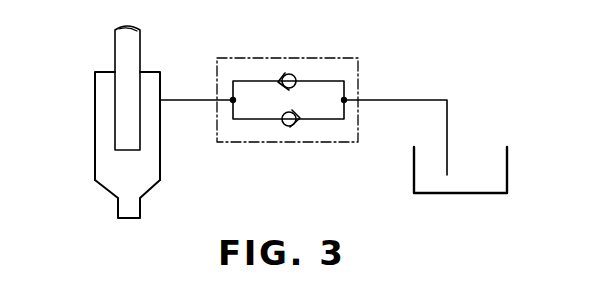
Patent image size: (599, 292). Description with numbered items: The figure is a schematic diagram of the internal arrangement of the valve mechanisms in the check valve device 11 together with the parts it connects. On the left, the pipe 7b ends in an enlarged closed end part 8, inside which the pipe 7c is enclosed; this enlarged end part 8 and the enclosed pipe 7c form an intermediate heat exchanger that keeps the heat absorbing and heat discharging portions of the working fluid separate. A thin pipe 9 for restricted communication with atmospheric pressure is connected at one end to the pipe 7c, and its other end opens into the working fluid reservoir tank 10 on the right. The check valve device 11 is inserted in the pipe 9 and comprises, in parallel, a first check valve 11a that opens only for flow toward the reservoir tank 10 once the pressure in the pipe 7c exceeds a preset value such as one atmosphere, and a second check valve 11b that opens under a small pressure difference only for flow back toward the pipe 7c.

The pipe 7b is at (115, 42).
The enlarged closed end part 8 is at (115, 125).
The pipe 7c is at (160, 158).
The check valve device 11 is at (345, 57).
The first check valve 11a is at (285, 74).
The second check valve 11b is at (291, 128).
The thin pipe 9 is at (400, 98).
The working fluid reservoir tank 10 is at (413, 170).